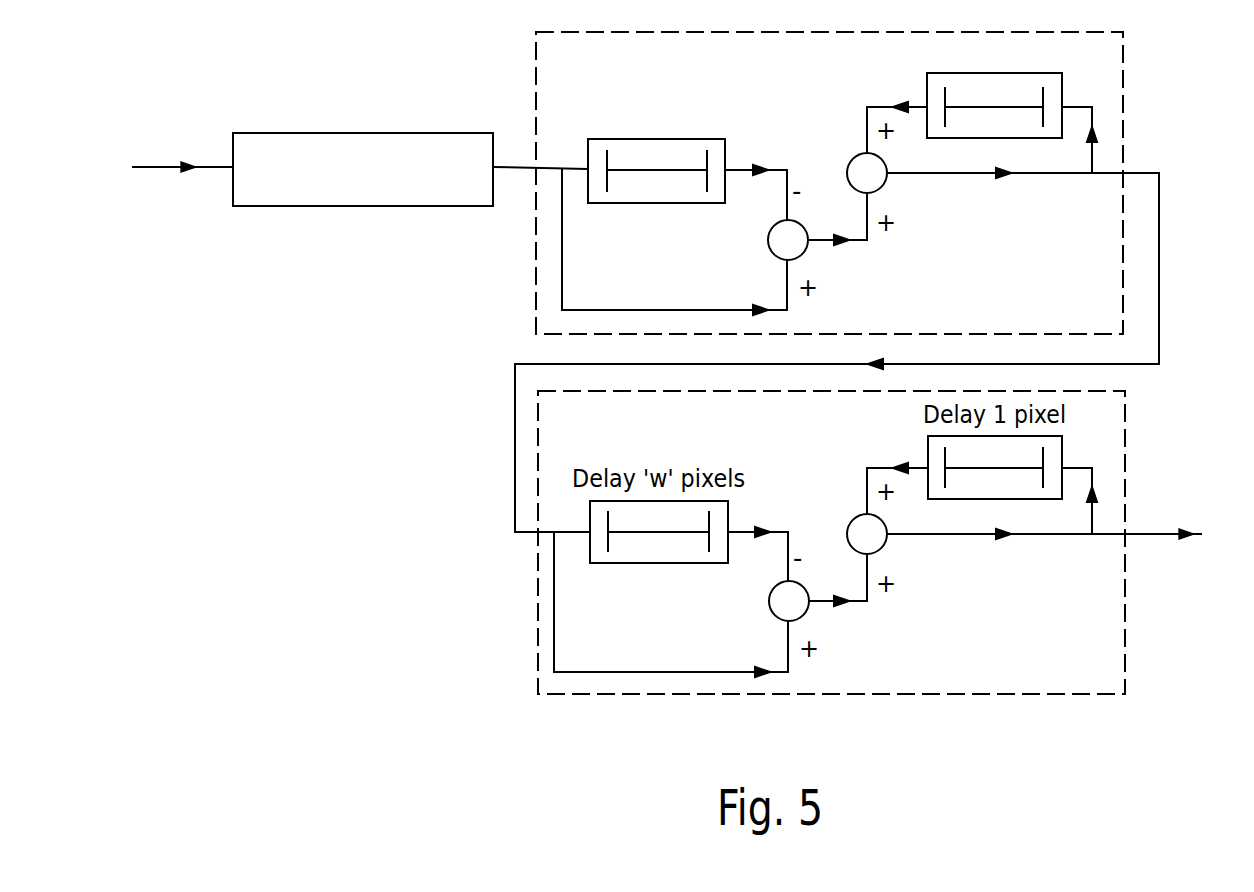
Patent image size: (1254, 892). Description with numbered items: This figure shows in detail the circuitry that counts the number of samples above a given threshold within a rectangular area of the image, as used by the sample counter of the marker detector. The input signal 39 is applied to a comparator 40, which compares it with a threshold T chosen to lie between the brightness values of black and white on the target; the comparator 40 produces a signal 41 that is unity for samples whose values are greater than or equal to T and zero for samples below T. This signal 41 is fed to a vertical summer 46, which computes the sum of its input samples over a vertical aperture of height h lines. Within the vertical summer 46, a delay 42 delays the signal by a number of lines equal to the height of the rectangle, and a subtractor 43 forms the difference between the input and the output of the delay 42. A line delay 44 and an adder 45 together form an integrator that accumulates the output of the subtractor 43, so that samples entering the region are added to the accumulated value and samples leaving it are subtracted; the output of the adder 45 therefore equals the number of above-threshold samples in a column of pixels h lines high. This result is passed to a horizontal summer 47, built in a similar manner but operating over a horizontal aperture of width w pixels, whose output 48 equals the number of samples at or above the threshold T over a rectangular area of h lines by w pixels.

The input signal 39 is at (192, 176).
The comparator 40 is at (370, 207).
The signal 41 is at (513, 167).
The delay 42 is at (668, 205).
The subtractor 43 is at (770, 255).
The line delay 44 is at (927, 83).
The adder 45 is at (887, 188).
The vertical summer 46 is at (1123, 73).
The horizontal summer 47 is at (1127, 615).
The output of the horizontal summer 48 is at (1188, 543).